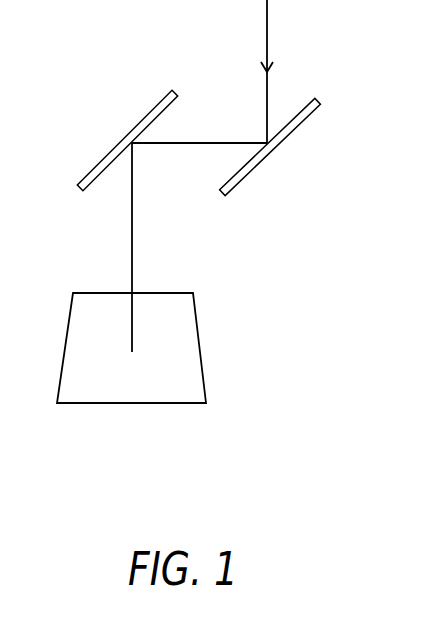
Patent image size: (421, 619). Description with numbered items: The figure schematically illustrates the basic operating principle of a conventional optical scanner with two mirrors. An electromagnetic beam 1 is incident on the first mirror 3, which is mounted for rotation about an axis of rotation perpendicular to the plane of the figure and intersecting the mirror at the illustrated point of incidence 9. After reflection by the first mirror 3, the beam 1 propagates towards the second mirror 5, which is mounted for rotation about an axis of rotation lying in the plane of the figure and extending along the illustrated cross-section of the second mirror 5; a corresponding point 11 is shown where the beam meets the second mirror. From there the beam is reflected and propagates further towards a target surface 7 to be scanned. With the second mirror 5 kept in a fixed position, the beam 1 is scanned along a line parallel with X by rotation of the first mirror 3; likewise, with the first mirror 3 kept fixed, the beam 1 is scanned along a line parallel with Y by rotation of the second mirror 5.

The electromagnetic beam 1 is at (268, 27).
The first mirror 3 is at (309, 130).
The second mirror 5 is at (102, 158).
The target surface 7 is at (173, 344).
The point of incidence 9 is at (266, 142).
The reflection point on second mirror 11 is at (135, 147).